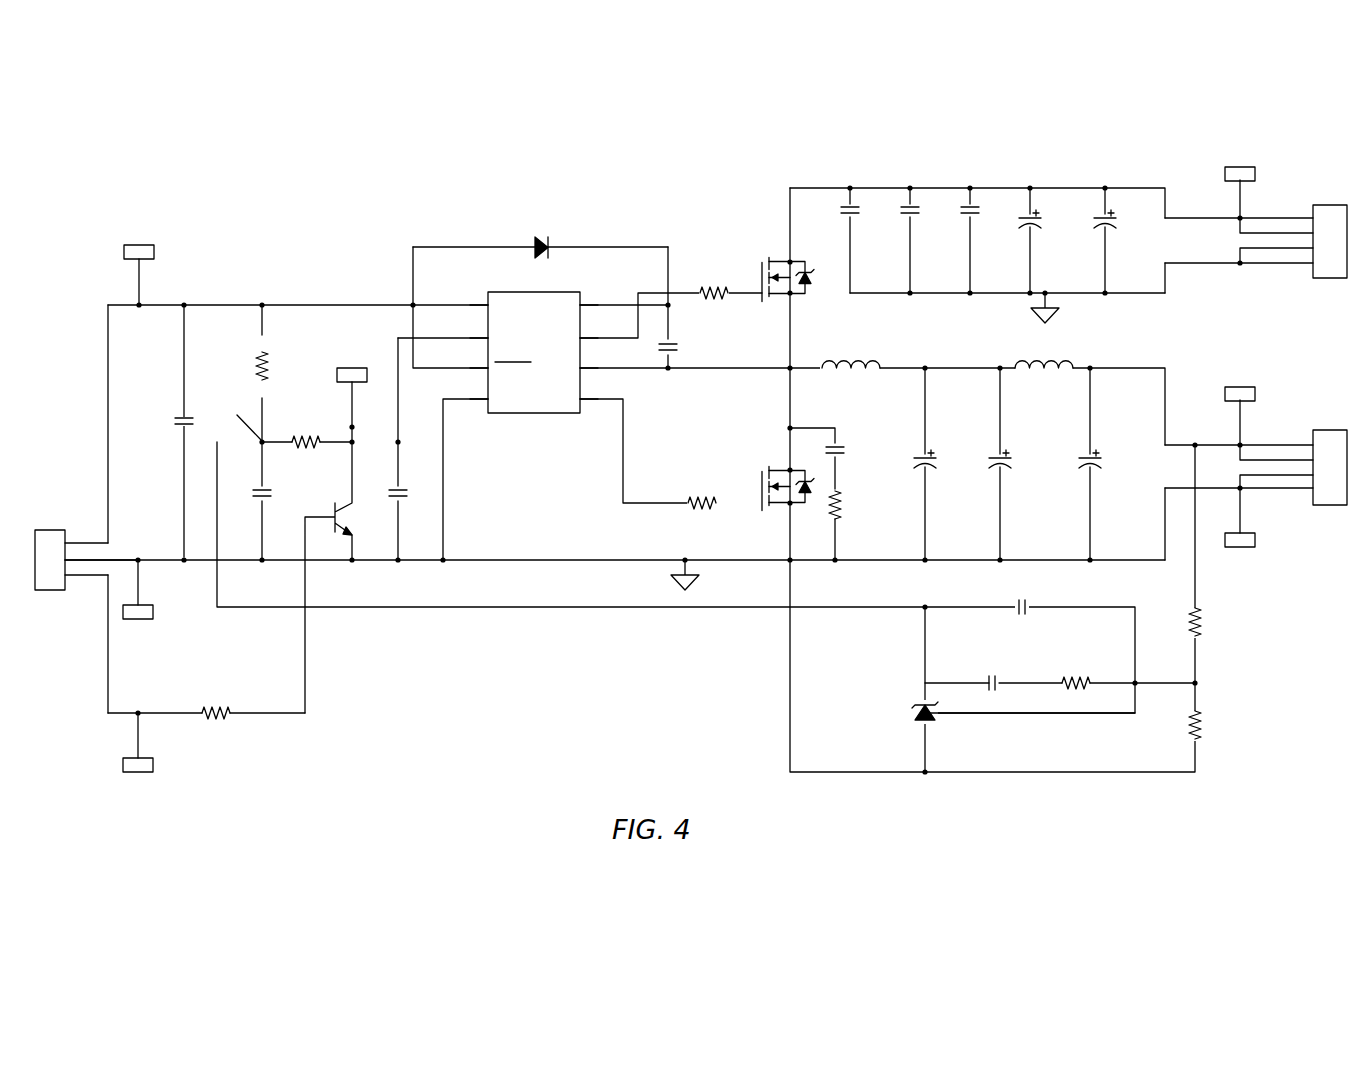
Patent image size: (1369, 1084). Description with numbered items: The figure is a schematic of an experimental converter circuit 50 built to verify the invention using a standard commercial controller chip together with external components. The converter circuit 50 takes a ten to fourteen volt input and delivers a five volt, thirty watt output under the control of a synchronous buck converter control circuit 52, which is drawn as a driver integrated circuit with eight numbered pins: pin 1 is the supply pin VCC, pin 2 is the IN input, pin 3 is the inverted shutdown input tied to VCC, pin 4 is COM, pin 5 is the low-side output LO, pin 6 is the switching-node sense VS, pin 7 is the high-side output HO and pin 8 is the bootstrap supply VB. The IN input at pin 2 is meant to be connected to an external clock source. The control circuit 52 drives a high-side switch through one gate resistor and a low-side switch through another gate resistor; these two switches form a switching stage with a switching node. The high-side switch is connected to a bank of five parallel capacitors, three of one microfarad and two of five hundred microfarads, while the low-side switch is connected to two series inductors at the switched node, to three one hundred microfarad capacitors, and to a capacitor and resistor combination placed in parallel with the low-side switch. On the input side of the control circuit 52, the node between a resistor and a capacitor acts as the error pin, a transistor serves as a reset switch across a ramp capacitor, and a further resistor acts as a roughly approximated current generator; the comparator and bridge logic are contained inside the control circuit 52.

The converter circuit 50 is at (298, 240).
The synchronous buck converter control circuit 52 is at (534, 373).
The U3 pin 1 (VCC) 1 is at (479, 298).
The U3 pin 2 (IN) 2 is at (479, 331).
The U3 pin 3 (SHDN) 3 is at (479, 361).
The U3 pin 4 (COM) 4 is at (479, 392).
The U3 pin 5 (LO) 5 is at (589, 392).
The U3 pin 6 (VS) 6 is at (589, 361).
The U3 pin 7 (HO) 7 is at (589, 331).
The U3 pin 8 (VB) 8 is at (589, 298).